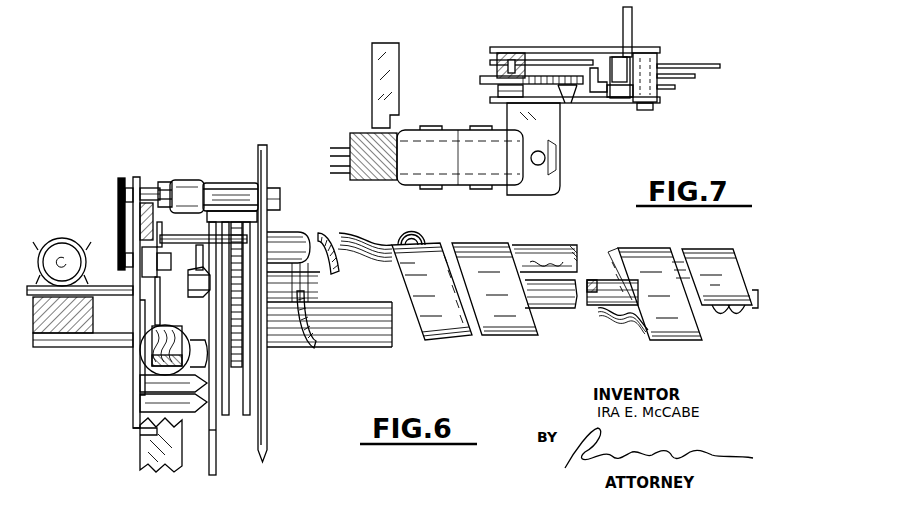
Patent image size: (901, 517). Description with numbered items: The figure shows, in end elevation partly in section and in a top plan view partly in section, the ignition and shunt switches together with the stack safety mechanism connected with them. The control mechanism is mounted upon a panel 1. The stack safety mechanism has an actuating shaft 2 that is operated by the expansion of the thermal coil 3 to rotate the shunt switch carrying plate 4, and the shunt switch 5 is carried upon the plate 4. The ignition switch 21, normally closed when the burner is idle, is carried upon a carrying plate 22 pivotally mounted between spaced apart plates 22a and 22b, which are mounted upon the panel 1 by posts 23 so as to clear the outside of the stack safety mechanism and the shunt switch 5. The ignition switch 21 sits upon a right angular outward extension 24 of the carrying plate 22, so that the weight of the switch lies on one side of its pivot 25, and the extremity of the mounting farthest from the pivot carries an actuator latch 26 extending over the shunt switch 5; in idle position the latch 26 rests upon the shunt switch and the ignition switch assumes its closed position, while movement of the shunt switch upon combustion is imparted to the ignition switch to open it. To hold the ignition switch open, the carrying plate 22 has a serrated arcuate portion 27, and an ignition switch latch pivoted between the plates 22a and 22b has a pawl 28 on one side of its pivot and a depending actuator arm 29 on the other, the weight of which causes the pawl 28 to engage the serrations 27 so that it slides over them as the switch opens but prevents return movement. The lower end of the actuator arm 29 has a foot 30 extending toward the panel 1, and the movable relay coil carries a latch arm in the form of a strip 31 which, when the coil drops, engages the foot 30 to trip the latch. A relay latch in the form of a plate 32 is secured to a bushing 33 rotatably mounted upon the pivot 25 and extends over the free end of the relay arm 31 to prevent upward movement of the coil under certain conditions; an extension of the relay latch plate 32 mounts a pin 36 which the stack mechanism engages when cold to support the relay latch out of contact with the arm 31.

In FIG. 6, the panel 1 is at (267, 422).
In FIG. 6, the actuating shaft 2 is at (592, 280).
In FIG. 6, the thermal coil 3 is at (547, 310).
In FIG. 6, the shunt switch carrying plate 4 is at (216, 466).
In FIG. 6, the shunt switch 5 is at (147, 357).
In FIG. 6, the ignition switch 21 is at (60, 246).
In FIG. 7, the ignition switch 21 is at (455, 165).
In FIG. 7, the carrying plate 22 is at (482, 81).
In FIG. 6, the spaced apart plate 22a is at (118, 185).
In FIG. 7, the spaced apart plate 22a is at (620, 105).
In FIG. 6, the spaced apart plate 22b is at (168, 182).
In FIG. 7, the spaced apart plate 22b is at (560, 38).
In FIG. 6, the posts 23 is at (232, 190).
In FIG. 6, the right angular outward extension 24 is at (104, 285).
In FIG. 7, the right angular outward extension 24 is at (556, 190).
In FIG. 6, the pivot 25 is at (148, 188).
In FIG. 7, the pivot 25 is at (500, 92).
In FIG. 6, the actuator latch 26 is at (122, 347).
In FIG. 7, the actuator latch 26 is at (377, 63).
In FIG. 7, the serrated arcuate portion 27 is at (573, 95).
In FIG. 6, the pawl 28 is at (140, 225).
In FIG. 7, the pawl 28 is at (597, 68).
In FIG. 6, the depending actuator arm 29 is at (133, 404).
In FIG. 7, the depending actuator arm 29 is at (672, 90).
In FIG. 6, the foot 30 is at (147, 432).
In FIG. 7, the foot 30 is at (666, 77).
In FIG. 6, the latch arm strip 31 is at (150, 450).
In FIG. 6, the relay latch plate 32 is at (160, 308).
In FIG. 7, the relay latch plate 32 is at (692, 63).
In FIG. 7, the bushing 33 is at (498, 70).
In FIG. 6, the pin 36 is at (190, 244).
In FIG. 7, the pin 36 is at (633, 22).